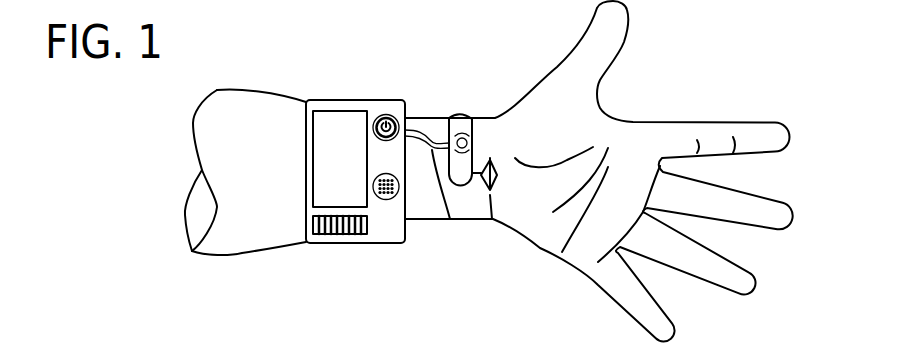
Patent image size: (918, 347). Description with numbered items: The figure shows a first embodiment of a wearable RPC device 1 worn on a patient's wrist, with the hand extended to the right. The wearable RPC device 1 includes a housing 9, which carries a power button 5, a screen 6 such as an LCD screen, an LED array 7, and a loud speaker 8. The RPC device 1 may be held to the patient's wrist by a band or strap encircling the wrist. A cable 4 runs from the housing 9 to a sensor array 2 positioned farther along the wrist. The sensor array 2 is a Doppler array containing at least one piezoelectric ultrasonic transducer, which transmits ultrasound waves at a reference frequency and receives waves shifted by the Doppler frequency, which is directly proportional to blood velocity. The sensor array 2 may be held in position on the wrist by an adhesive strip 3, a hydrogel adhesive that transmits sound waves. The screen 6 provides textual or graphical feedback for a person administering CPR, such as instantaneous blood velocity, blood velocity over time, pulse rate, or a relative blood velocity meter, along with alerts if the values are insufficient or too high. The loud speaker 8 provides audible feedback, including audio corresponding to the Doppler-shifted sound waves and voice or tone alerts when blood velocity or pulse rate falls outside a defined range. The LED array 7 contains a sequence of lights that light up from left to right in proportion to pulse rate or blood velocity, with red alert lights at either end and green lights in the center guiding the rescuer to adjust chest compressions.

The wearable RPC device 1 is at (382, 82).
The sensor array 2 is at (461, 117).
The adhesive strip 3 is at (468, 116).
The cable 4 is at (450, 219).
The power button 5 is at (376, 114).
The screen 6 is at (318, 188).
The LED array 7 is at (343, 234).
The loud speaker 8 is at (388, 200).
The housing 9 is at (305, 155).